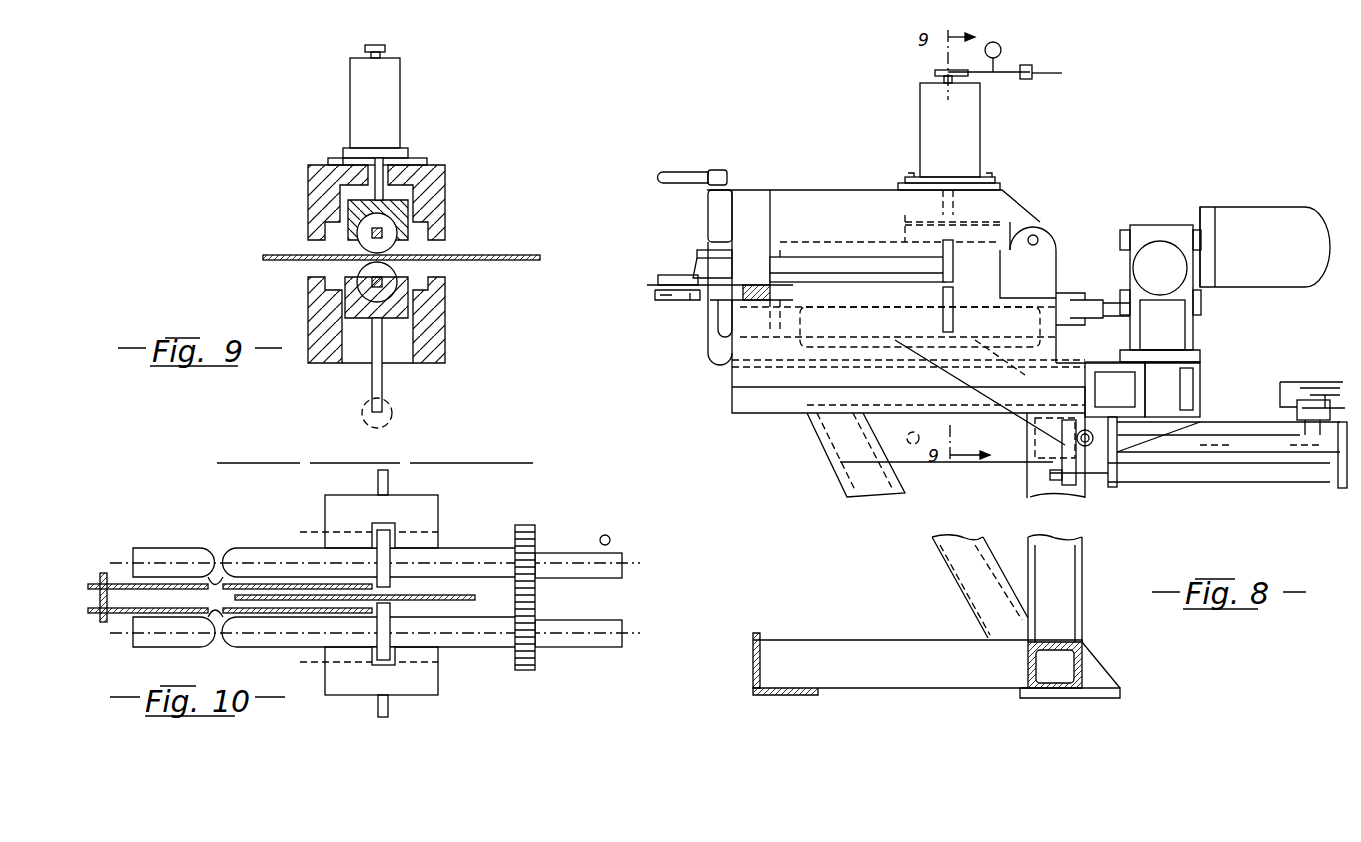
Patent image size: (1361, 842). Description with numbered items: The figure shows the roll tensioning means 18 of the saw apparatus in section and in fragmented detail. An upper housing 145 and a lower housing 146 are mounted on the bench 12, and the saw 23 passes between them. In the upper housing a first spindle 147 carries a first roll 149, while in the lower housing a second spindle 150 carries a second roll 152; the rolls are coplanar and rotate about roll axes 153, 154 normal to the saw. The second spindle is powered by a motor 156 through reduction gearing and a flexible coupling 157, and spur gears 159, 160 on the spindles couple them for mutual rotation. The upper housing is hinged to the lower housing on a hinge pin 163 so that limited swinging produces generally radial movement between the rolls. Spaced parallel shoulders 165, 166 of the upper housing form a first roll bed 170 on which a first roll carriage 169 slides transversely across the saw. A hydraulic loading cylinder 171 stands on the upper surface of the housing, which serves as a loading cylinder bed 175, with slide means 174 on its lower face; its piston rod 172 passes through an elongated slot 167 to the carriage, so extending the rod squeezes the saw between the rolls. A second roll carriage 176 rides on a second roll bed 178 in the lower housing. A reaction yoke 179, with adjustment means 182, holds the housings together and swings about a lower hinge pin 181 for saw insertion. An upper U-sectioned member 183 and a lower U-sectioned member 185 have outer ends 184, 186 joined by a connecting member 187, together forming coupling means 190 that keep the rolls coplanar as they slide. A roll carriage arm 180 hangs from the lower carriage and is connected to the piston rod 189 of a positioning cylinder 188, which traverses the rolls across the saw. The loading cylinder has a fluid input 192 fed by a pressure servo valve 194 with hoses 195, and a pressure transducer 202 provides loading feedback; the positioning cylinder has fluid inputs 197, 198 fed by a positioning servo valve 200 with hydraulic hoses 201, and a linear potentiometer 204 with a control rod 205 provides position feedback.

In FIG. 8, the bench 12 is at (1060, 582).
In FIG. 9, the roll tensioning means 18 is at (482, 162).
In FIG. 8, the roll tensioning means 18 is at (1050, 143).
In FIG. 9, the saw 23 is at (518, 255).
In FIG. 10, the saw 23 is at (430, 602).
In FIG. 9, the upper housing 145 is at (432, 205).
In FIG. 8, the upper housing 145 is at (843, 212).
In FIG. 9, the lower housing 146 is at (430, 345).
In FIG. 8, the lower housing 146 is at (760, 375).
In FIG. 9, the first spindle 147 is at (362, 240).
In FIG. 10, the first spindle 147 is at (550, 578).
In FIG. 8, the first spindle 147 is at (857, 269).
In FIG. 9, the first roll 149 is at (392, 240).
In FIG. 10, the first roll 149 is at (395, 540).
In FIG. 8, the first roll 149 is at (953, 270).
In FIG. 9, the second spindle 150 is at (368, 276).
In FIG. 10, the second spindle 150 is at (595, 642).
In FIG. 8, the second spindle 150 is at (1070, 295).
In FIG. 9, the second roll 152 is at (392, 278).
In FIG. 10, the second roll 152 is at (372, 652).
In FIG. 8, the second roll 152 is at (940, 300).
In FIG. 10, the roll axis 153 is at (150, 562).
In FIG. 10, the roll axis 154 is at (160, 635).
In FIG. 8, the motor 156 is at (1288, 192).
In FIG. 8, the flexible coupling 157 is at (1080, 318).
In FIG. 10, the spur gear 159 is at (540, 516).
In FIG. 10, the spur gear 160 is at (523, 672).
In FIG. 10, the hinge pin 163 is at (600, 536).
In FIG. 8, the hinge pin 163 is at (1040, 240).
In FIG. 9, the shoulder 165 is at (440, 226).
In FIG. 9, the shoulder 166 is at (320, 228).
In FIG. 9, the elongated slot 167 is at (395, 168).
In FIG. 8, the elongated slot 167 is at (950, 178).
In FIG. 9, the first roll carriage 169 is at (352, 208).
In FIG. 10, the first roll carriage 169 is at (438, 510).
In FIG. 8, the first roll carriage 169 is at (915, 240).
In FIG. 9, the first roll bed 170 is at (303, 232).
In FIG. 10, the first roll bed 170 is at (297, 531).
In FIG. 8, the first roll bed 170 is at (845, 240).
In FIG. 9, the loading cylinder 171 is at (385, 90).
In FIG. 8, the loading cylinder 171 is at (968, 122).
In FIG. 9, the piston rod 172 is at (397, 176).
In FIG. 10, the piston rod 172 is at (389, 482).
In FIG. 8, the piston rod 172 is at (940, 206).
In FIG. 9, the slide means 174 is at (345, 155).
In FIG. 9, the loading cylinder bed 175 is at (320, 158).
In FIG. 10, the loading cylinder bed 175 is at (252, 462).
In FIG. 8, the loading cylinder bed 175 is at (790, 160).
In FIG. 9, the second roll carriage 176 is at (352, 304).
In FIG. 10, the second roll carriage 176 is at (415, 690).
In FIG. 8, the second roll carriage 176 is at (985, 325).
In FIG. 9, the second roll bed 178 is at (430, 290).
In FIG. 10, the second roll bed 178 is at (440, 668).
In FIG. 8, the second roll bed 178 is at (755, 315).
In FIG. 8, the reaction yoke 179 is at (708, 208).
In FIG. 9, the roll carriage arm 180 is at (382, 390).
In FIG. 10, the roll carriage arm 180 is at (378, 708).
In FIG. 8, the roll carriage arm 180 is at (1052, 392).
In FIG. 8, the lower hinge pin 181 is at (706, 352).
In FIG. 8, the adjustment means 182 is at (675, 172).
In FIG. 10, the upper U-sectioned member 183 is at (252, 560).
In FIG. 8, the upper U-sectioned member 183 is at (835, 250).
In FIG. 10, the outer end 184 is at (125, 582).
In FIG. 8, the outer end 184 is at (675, 270).
In FIG. 10, the lower U-sectioned member 185 is at (275, 645).
In FIG. 8, the lower U-sectioned member 185 is at (793, 300).
In FIG. 10, the outer end 186 is at (128, 615).
In FIG. 8, the outer end 186 is at (660, 302).
In FIG. 10, the connecting member 187 is at (98, 595).
In FIG. 8, the connecting member 187 is at (650, 286).
In FIG. 9, the positioning cylinder 188 is at (393, 412).
In FIG. 8, the positioning cylinder 188 is at (1275, 455).
In FIG. 8, the piston rod 189 is at (1090, 445).
In FIG. 10, the coupling means 190 is at (80, 622).
In FIG. 8, the coupling means 190 is at (625, 275).
In FIG. 9, the fluid input 192 is at (388, 54).
In FIG. 8, the fluid input 192 is at (940, 80).
In FIG. 8, the pressure servo valve 194 is at (1033, 70).
In FIG. 8, the hoses 195 is at (1058, 76).
In FIG. 8, the fluid input 197 is at (1215, 455).
In FIG. 8, the fluid input 198 is at (1325, 470).
In FIG. 8, the positioning servo valve 200 is at (1300, 412).
In FIG. 8, the hydraulic hoses 201 is at (1315, 382).
In FIG. 8, the pressure transducer 202 is at (1002, 50).
In FIG. 8, the linear potentiometer 204 is at (1200, 478).
In FIG. 8, the control rod 205 is at (1100, 480).